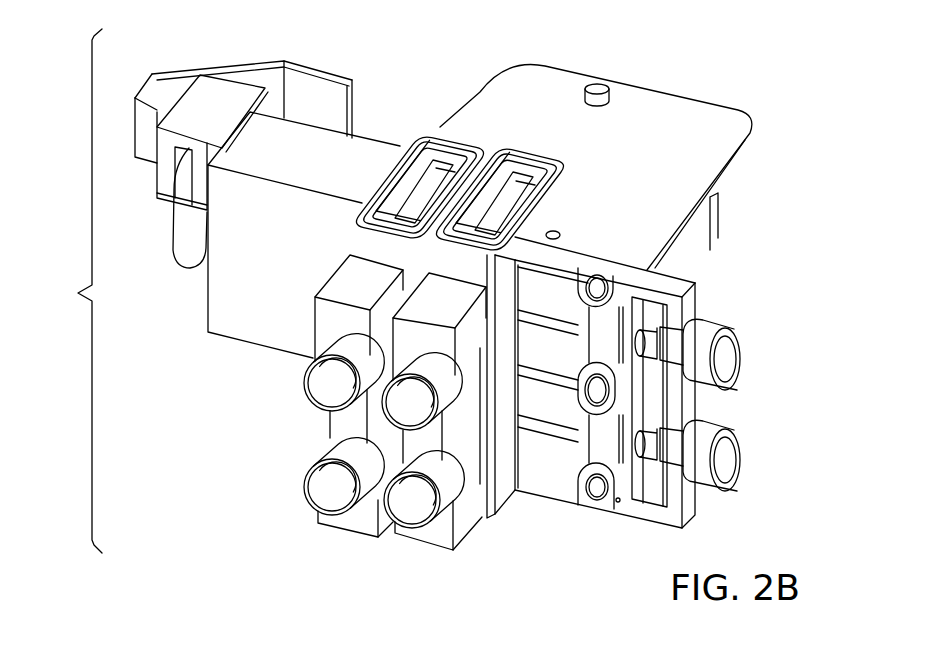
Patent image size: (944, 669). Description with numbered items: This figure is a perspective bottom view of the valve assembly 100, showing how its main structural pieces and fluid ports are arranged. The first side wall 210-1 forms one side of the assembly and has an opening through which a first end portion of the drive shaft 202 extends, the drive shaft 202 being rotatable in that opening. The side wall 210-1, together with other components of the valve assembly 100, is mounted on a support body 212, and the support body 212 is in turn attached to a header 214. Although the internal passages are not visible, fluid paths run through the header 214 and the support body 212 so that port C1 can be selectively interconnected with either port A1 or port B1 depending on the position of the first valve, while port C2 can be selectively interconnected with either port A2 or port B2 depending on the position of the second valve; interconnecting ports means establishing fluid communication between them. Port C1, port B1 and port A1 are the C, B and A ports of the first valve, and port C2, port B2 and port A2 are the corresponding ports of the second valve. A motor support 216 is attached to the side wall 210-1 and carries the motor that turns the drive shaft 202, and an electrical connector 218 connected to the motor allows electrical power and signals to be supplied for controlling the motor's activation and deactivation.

The valve assembly 100 is at (67, 291).
The drive shaft 202 is at (598, 85).
The first side wall 210-1 is at (692, 115).
The support body 212 is at (673, 283).
The header 214 is at (507, 302).
The motor support 216 is at (222, 300).
The electrical connector 218 is at (146, 142).
The port A1 is at (734, 382).
The port A2 is at (734, 482).
The port B1 is at (372, 428).
The port B2 is at (453, 545).
The port C1 is at (310, 397).
The port C2 is at (305, 500).